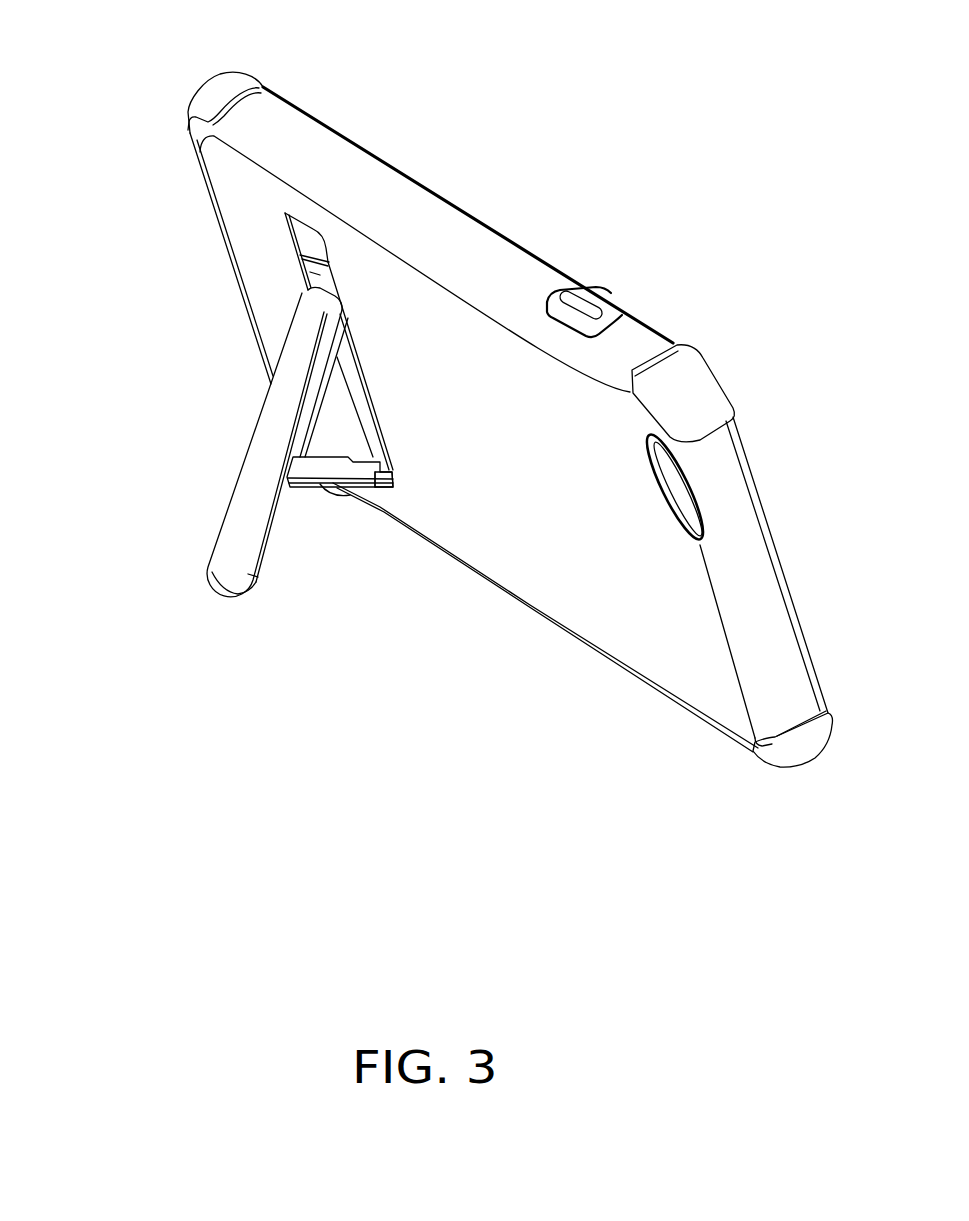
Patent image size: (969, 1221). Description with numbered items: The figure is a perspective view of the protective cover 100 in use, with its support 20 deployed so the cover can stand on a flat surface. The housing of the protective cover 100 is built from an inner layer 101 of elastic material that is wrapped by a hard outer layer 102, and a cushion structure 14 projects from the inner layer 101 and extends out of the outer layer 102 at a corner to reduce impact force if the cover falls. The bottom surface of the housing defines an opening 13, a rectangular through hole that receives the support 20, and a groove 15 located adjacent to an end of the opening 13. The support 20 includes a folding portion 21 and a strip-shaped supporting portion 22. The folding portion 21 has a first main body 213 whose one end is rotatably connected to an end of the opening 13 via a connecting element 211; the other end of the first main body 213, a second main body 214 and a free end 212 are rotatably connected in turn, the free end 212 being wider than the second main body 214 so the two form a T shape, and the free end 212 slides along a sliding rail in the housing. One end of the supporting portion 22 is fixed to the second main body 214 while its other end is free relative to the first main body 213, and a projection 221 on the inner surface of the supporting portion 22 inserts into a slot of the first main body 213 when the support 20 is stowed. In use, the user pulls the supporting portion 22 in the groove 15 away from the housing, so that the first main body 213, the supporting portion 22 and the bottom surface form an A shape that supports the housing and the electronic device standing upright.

The protective cover 100 is at (435, 141).
The opening 13 is at (355, 382).
The cushion structure 14 is at (215, 83).
The groove 15 is at (388, 488).
The support 20 is at (221, 417).
The folding portion 21 is at (246, 354).
The connecting element 211 is at (332, 352).
The free end 212 is at (302, 260).
The first main body 213 is at (323, 467).
The second main body 214 is at (308, 290).
The supporting portion 22 is at (219, 457).
The projection 221 is at (253, 579).
The inner layer 101 is at (740, 443).
The outer layer 102 is at (733, 527).